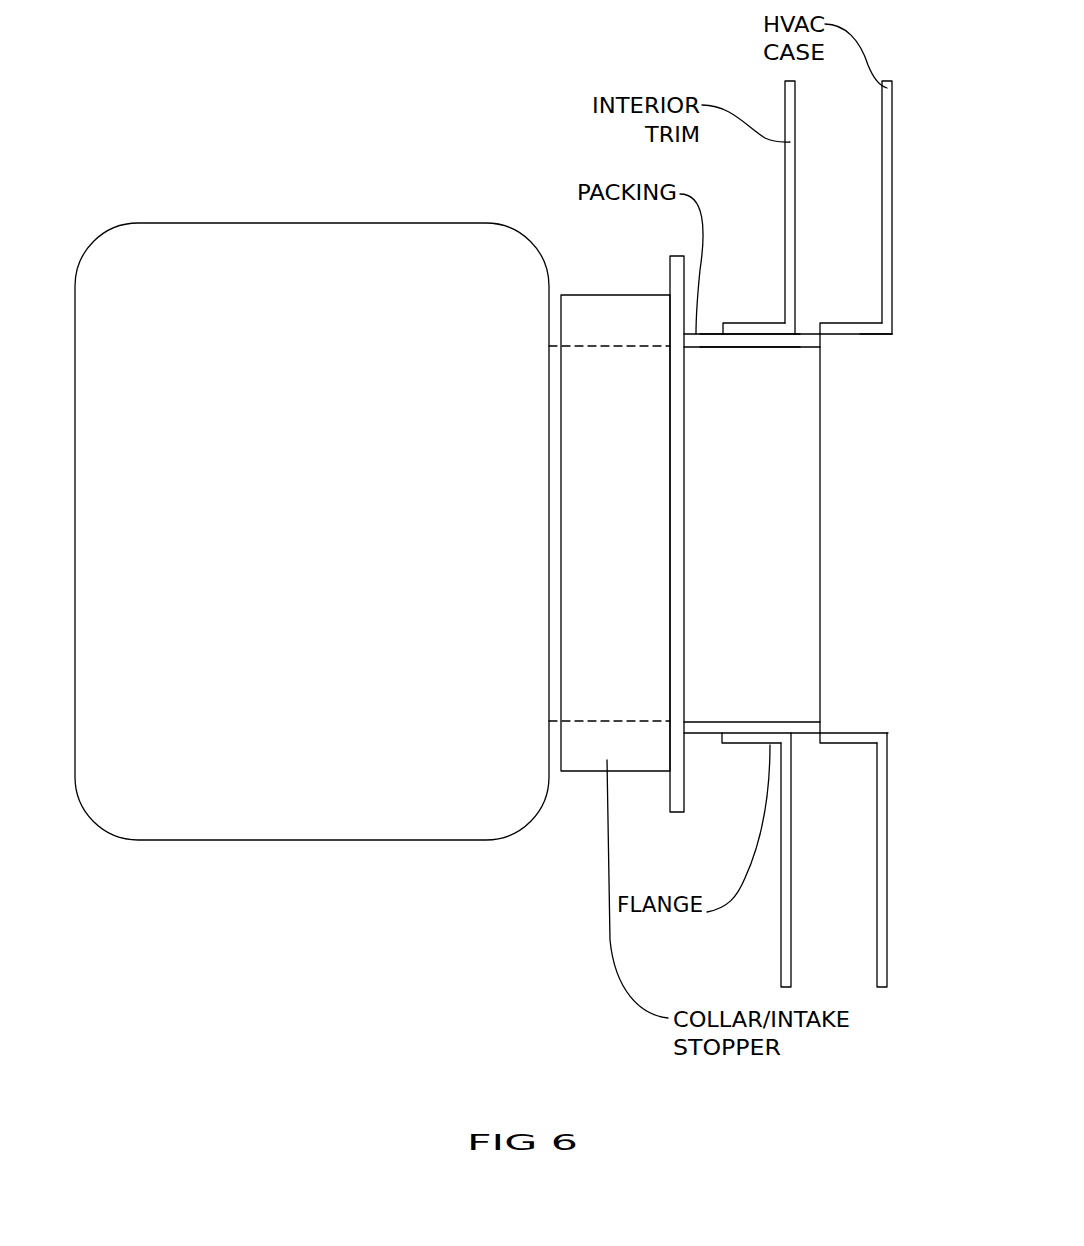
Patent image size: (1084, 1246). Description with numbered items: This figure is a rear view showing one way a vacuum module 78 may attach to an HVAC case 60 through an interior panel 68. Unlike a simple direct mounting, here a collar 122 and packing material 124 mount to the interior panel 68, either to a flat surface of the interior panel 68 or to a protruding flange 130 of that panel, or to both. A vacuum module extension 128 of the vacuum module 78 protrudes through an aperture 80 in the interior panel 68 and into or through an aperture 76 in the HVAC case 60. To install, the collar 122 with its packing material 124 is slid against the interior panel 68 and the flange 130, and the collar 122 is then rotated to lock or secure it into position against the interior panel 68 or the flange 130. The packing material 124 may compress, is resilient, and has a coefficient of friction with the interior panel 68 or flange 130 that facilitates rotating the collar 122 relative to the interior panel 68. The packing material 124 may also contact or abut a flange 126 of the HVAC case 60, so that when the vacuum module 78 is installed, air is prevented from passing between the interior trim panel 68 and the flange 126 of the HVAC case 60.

The HVAC case 60 is at (892, 245).
The interior panel 68 is at (795, 245).
The aperture 76 is at (871, 334).
The vacuum module 78 is at (200, 840).
The aperture 80 is at (780, 335).
The collar 122 is at (612, 295).
The packing material 124 is at (711, 334).
The flange 126 is at (866, 323).
The vacuum module extension 128 is at (822, 378).
The flange 130 is at (775, 323).